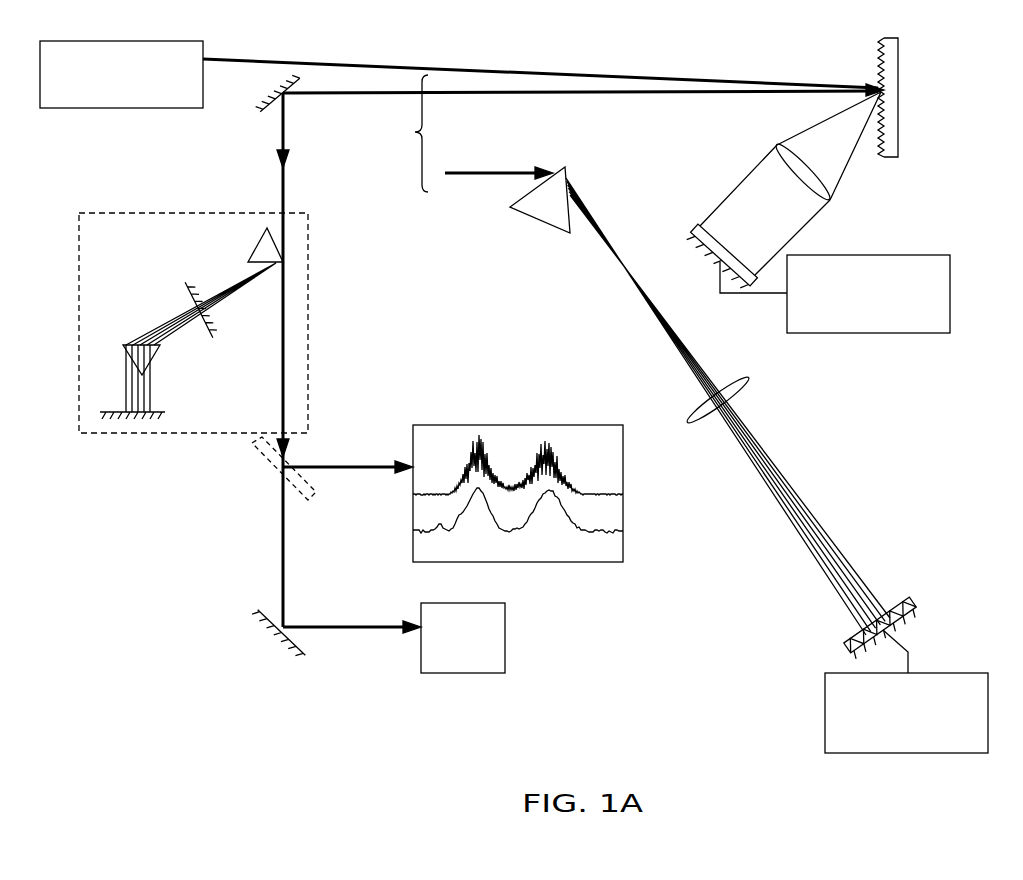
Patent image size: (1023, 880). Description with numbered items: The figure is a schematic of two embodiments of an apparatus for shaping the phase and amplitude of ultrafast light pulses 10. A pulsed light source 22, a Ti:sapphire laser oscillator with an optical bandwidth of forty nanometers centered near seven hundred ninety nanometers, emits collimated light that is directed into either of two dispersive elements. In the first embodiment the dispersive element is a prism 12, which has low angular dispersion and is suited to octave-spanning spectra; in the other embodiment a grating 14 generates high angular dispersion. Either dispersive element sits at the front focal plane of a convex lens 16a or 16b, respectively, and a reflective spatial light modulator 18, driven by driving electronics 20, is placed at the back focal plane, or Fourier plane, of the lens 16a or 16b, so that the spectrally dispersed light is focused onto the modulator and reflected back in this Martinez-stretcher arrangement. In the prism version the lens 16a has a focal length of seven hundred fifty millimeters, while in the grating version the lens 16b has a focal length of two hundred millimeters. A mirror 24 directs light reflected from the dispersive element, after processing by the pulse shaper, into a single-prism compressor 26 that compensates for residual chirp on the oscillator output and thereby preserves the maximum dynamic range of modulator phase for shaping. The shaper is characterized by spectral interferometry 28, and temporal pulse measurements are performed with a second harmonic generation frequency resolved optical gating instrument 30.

The apparatus for shaping the phase and amplitude of ultrafast light pulses 10 is at (210, 626).
The prism 12 is at (510, 203).
The grating 14 is at (891, 36).
The convex lens 16a is at (695, 418).
The convex lens 16b is at (816, 173).
The reflective spatial light modulator 18 is at (903, 586).
The driving electronics 20 is at (882, 328).
The pulsed light source 22 is at (100, 112).
The mirror 24 is at (286, 99).
The single-prism compressor 26 is at (143, 272).
The spectral interferometry 28 is at (626, 422).
The second harmonic generation frequency resolved optical gating 30 is at (477, 665).